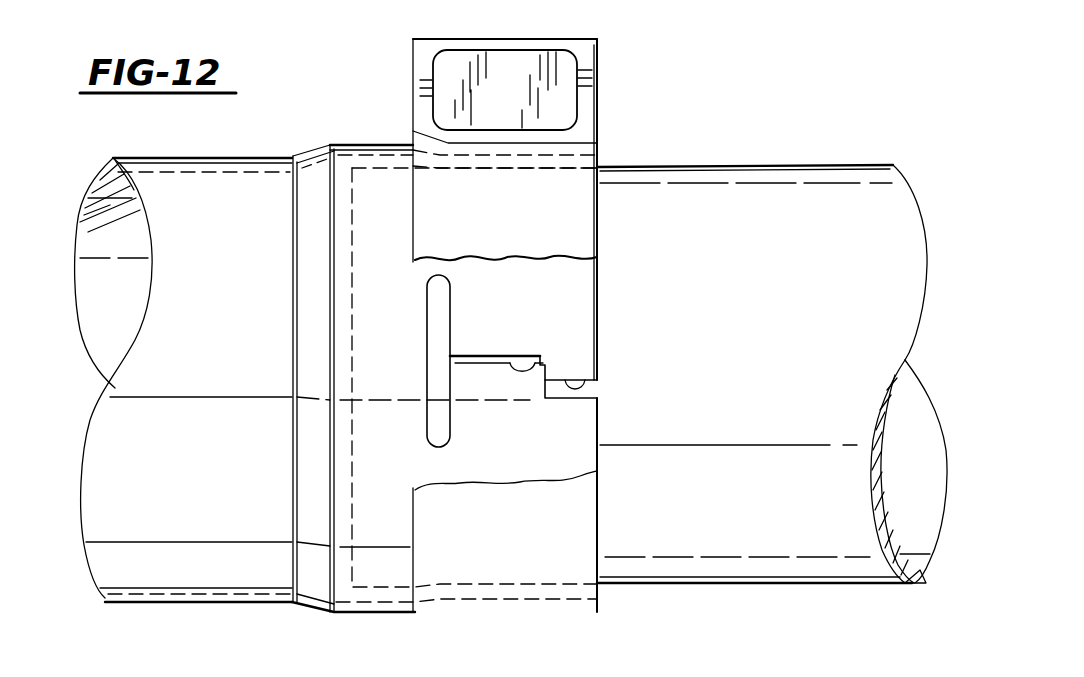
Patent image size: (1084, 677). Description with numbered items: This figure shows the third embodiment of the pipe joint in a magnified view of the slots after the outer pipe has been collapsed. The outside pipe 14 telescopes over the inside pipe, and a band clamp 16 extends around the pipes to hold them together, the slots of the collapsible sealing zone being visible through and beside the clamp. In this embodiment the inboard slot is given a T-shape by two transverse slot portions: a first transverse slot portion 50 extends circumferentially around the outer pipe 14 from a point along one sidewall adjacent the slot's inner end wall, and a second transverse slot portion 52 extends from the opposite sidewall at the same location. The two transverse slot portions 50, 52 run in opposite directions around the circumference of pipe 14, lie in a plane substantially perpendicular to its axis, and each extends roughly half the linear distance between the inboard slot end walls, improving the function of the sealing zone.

The outside pipe 14 is at (250, 156).
The band clamp 16 is at (432, 90).
The second transverse slot portion 52 is at (438, 303).
The first transverse slot portion 50 is at (438, 434).